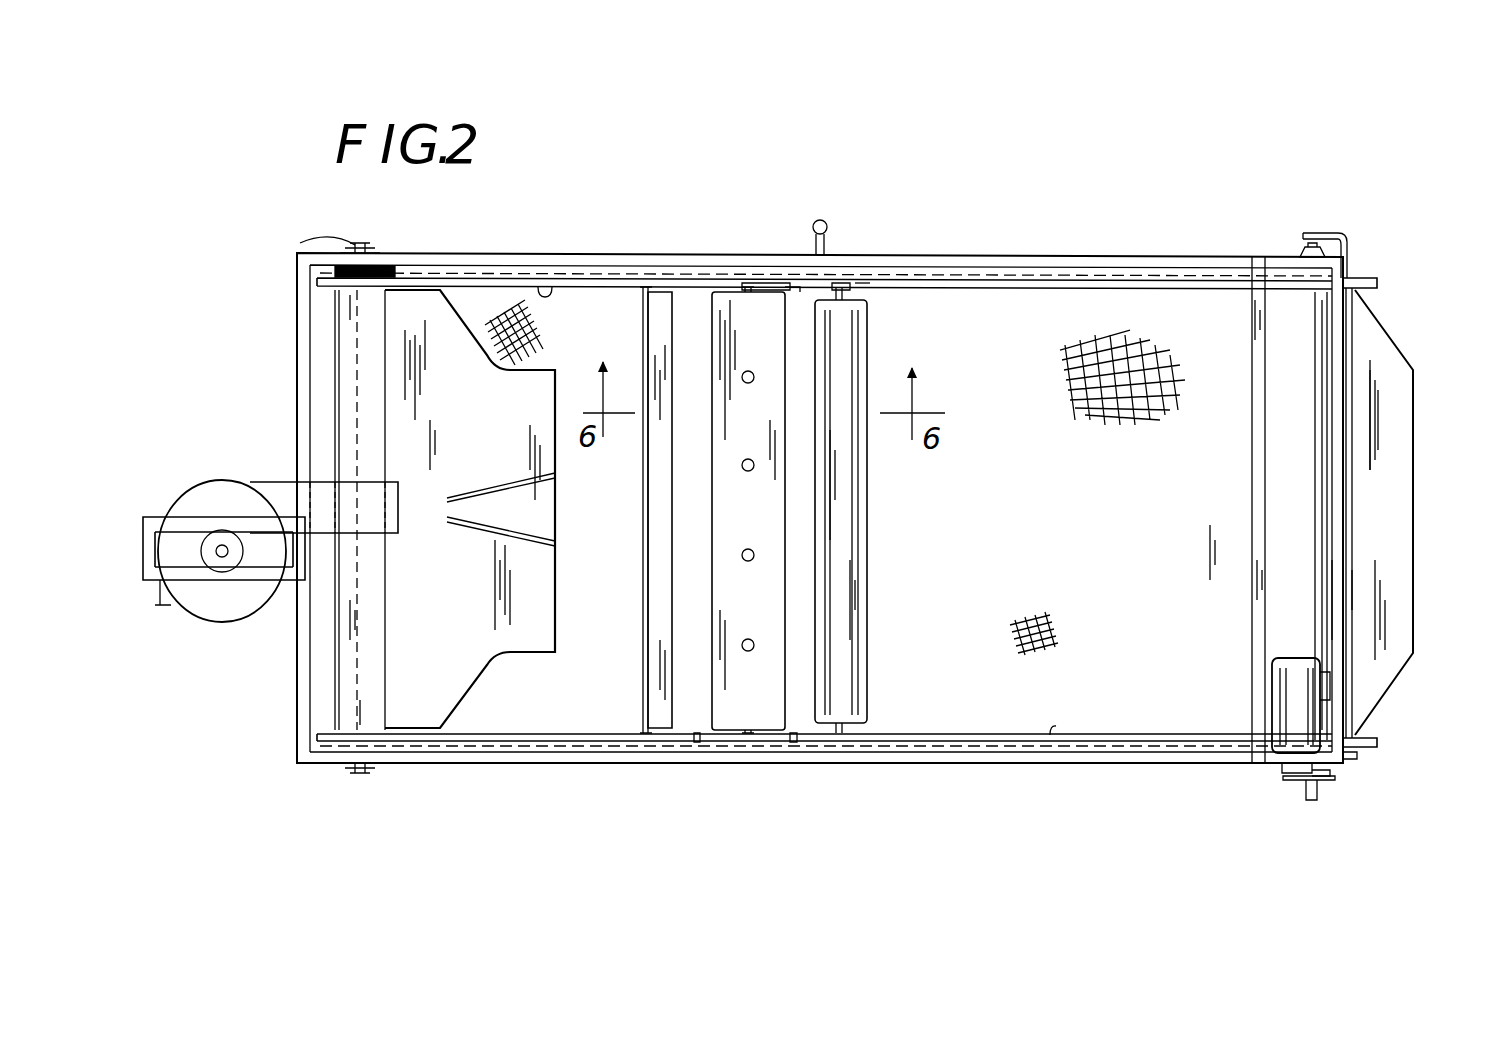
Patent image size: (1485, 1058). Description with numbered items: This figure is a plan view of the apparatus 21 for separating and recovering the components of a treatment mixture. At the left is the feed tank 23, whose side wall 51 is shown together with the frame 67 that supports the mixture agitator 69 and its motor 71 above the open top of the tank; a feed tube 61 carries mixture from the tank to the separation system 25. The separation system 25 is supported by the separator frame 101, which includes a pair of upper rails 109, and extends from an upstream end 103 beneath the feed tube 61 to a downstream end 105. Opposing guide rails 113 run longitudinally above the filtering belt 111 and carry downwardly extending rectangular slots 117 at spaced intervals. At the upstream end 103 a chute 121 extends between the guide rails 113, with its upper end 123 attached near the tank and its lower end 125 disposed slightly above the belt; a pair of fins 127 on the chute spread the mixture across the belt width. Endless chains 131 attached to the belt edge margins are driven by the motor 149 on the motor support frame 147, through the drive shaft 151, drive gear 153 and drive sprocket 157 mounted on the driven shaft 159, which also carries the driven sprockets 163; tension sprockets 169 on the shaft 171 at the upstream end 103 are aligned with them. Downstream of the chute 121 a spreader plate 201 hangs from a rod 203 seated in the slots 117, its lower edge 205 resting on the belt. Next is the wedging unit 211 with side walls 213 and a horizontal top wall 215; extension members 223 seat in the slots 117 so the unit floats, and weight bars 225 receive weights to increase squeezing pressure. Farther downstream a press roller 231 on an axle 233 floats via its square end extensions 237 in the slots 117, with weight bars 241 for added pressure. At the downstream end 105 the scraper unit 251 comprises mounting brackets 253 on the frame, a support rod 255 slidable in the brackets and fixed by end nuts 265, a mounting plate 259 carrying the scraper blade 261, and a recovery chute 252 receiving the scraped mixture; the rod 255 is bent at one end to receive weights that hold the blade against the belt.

The apparatus 21 is at (922, 158).
The feed tank 23 is at (165, 520).
The separation system 25 is at (995, 252).
The side wall 51 is at (265, 612).
The feed tube 61 is at (256, 480).
The frame 67 is at (190, 483).
The mixture agitator 69 is at (197, 578).
The motor 71 is at (226, 598).
The separator frame 101 is at (1070, 763).
The upstream end 103 is at (296, 757).
The downstream end 105 is at (1345, 615).
The upper rails 109 is at (495, 255).
The filtering belt 111 is at (645, 290).
The guide rails 113 is at (542, 290).
The rectangular slots 117 is at (697, 285).
The chute 121 is at (465, 690).
The upper end 123 is at (383, 350).
The lower end 125 is at (545, 385).
The fins 127 is at (480, 525).
The endless chains 131 is at (1078, 275).
The motor support frame 147 is at (1258, 325).
The motor 149 is at (1320, 665).
The drive shaft 151 is at (1290, 771).
The drive gear 153 is at (1292, 780).
The drive sprocket 157 is at (1330, 780).
The driven shaft 159 is at (1312, 802).
The driven sprockets 163 is at (1285, 270).
The tension sprockets 169 is at (345, 285).
The shaft 171 is at (355, 245).
The spreader plate 201 is at (645, 700).
The rod 203 is at (655, 700).
The lower edge 205 is at (715, 700).
The wedging unit 211 is at (700, 325).
The side walls 213 is at (763, 293).
The top wall 215 is at (775, 300).
The extension members 223 is at (738, 290).
The weight bars 225 is at (748, 383).
The press roller 231 is at (855, 710).
The axle 233 is at (848, 300).
The end extensions 237 is at (825, 285).
The weight bars 241 is at (832, 292).
The scraper unit 251 is at (1365, 348).
The recovery chute 252 is at (1415, 480).
The mounting brackets 253 is at (1368, 288).
The support rod 255 is at (1356, 272).
The mounting plate 259 is at (1353, 400).
The scraper blade 261 is at (1350, 570).
The end nuts 265 is at (1352, 272).